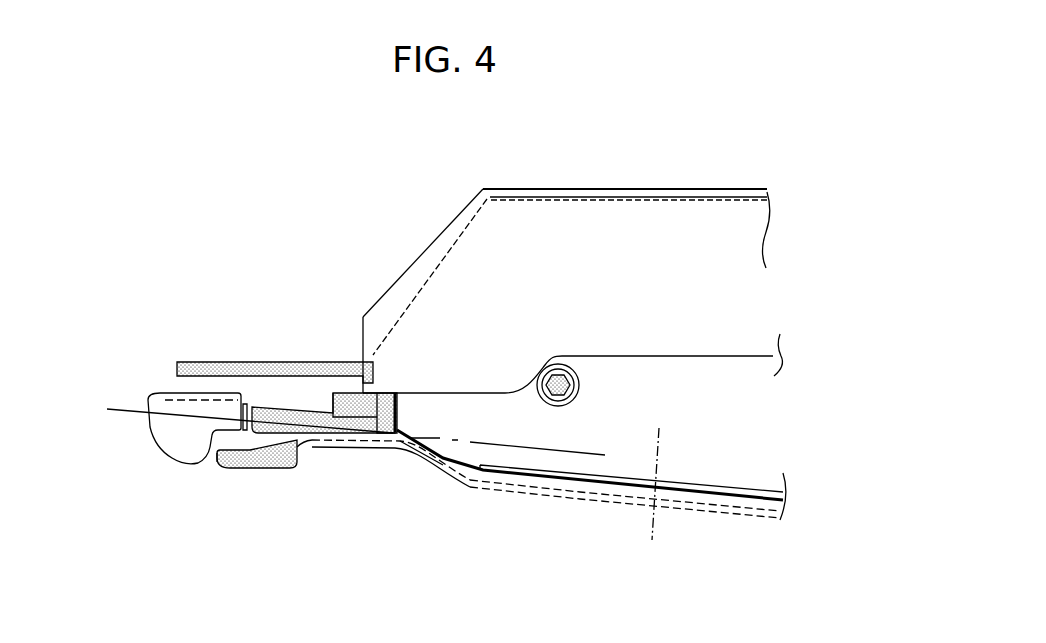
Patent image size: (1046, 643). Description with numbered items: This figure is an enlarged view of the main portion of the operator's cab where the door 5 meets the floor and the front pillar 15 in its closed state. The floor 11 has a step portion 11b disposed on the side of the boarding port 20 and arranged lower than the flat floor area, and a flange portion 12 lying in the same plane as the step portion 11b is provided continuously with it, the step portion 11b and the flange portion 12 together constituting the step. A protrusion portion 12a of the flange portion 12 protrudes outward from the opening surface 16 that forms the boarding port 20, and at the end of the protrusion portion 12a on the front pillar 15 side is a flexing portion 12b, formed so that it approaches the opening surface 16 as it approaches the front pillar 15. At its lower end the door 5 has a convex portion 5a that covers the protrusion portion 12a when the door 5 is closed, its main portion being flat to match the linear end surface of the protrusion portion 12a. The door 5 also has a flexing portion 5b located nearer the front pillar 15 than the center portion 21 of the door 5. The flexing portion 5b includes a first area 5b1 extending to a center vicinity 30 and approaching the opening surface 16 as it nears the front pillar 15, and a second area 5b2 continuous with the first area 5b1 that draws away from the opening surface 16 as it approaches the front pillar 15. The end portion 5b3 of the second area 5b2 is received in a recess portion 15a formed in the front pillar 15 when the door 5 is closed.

The door 5 is at (630, 507).
The convex portion 5a is at (605, 503).
The flexing portion 5b is at (383, 452).
The first area 5b1 is at (430, 468).
The second area 5b2 is at (297, 457).
The end portion 5b3 is at (228, 462).
The floor 11 is at (768, 201).
The step portion 11b is at (718, 255).
The flange portion 12 is at (732, 460).
The protrusion portion 12a is at (535, 477).
The flexing portion 12b is at (442, 448).
The front pillar 15 is at (192, 408).
The recess portion 15a is at (207, 447).
The opening surface 16 is at (236, 425).
The boarding port 20 is at (577, 450).
The center portion 21 is at (652, 527).
The center vicinity 30 is at (355, 403).